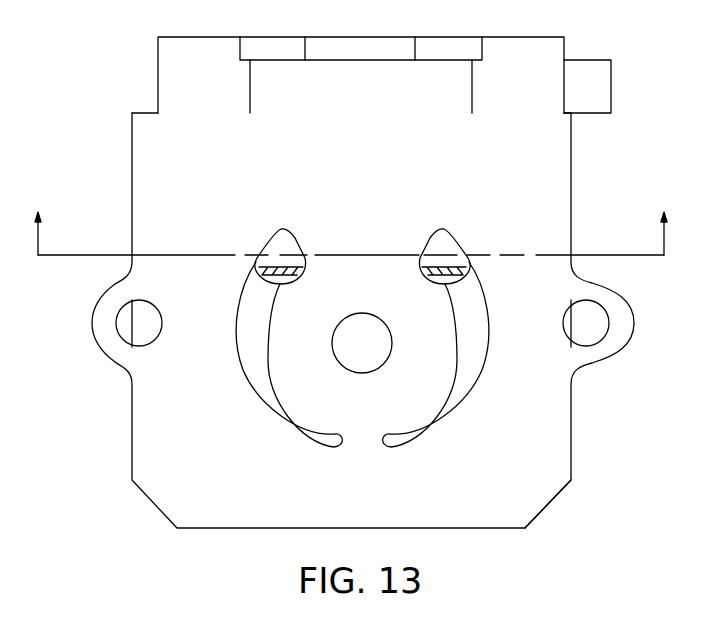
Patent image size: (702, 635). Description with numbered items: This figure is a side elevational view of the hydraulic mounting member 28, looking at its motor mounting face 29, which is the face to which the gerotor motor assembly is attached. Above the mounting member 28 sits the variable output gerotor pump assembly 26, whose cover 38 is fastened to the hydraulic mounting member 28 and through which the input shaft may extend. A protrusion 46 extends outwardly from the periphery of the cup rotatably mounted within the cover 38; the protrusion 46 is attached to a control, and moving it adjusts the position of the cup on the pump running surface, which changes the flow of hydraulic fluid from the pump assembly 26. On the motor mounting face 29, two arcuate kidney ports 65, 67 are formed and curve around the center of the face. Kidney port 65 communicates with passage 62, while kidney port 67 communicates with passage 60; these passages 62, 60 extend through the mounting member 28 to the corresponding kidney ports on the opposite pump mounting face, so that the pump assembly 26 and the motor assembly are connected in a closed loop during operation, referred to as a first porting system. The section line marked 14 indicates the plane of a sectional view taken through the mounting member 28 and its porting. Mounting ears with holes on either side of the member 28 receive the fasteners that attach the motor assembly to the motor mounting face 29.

The variable output gerotor pump assembly 26 is at (118, 73).
The cover 38 is at (374, 96).
The protrusion 46 is at (600, 86).
The motor mounting face 29 is at (374, 211).
The hydraulic mounting member 28 is at (549, 505).
The section line 14- 14 is at (354, 219).
The passage 62 is at (278, 246).
The passage 60 is at (449, 246).
The kidney port 65 is at (257, 400).
The kidney port 67 is at (468, 400).